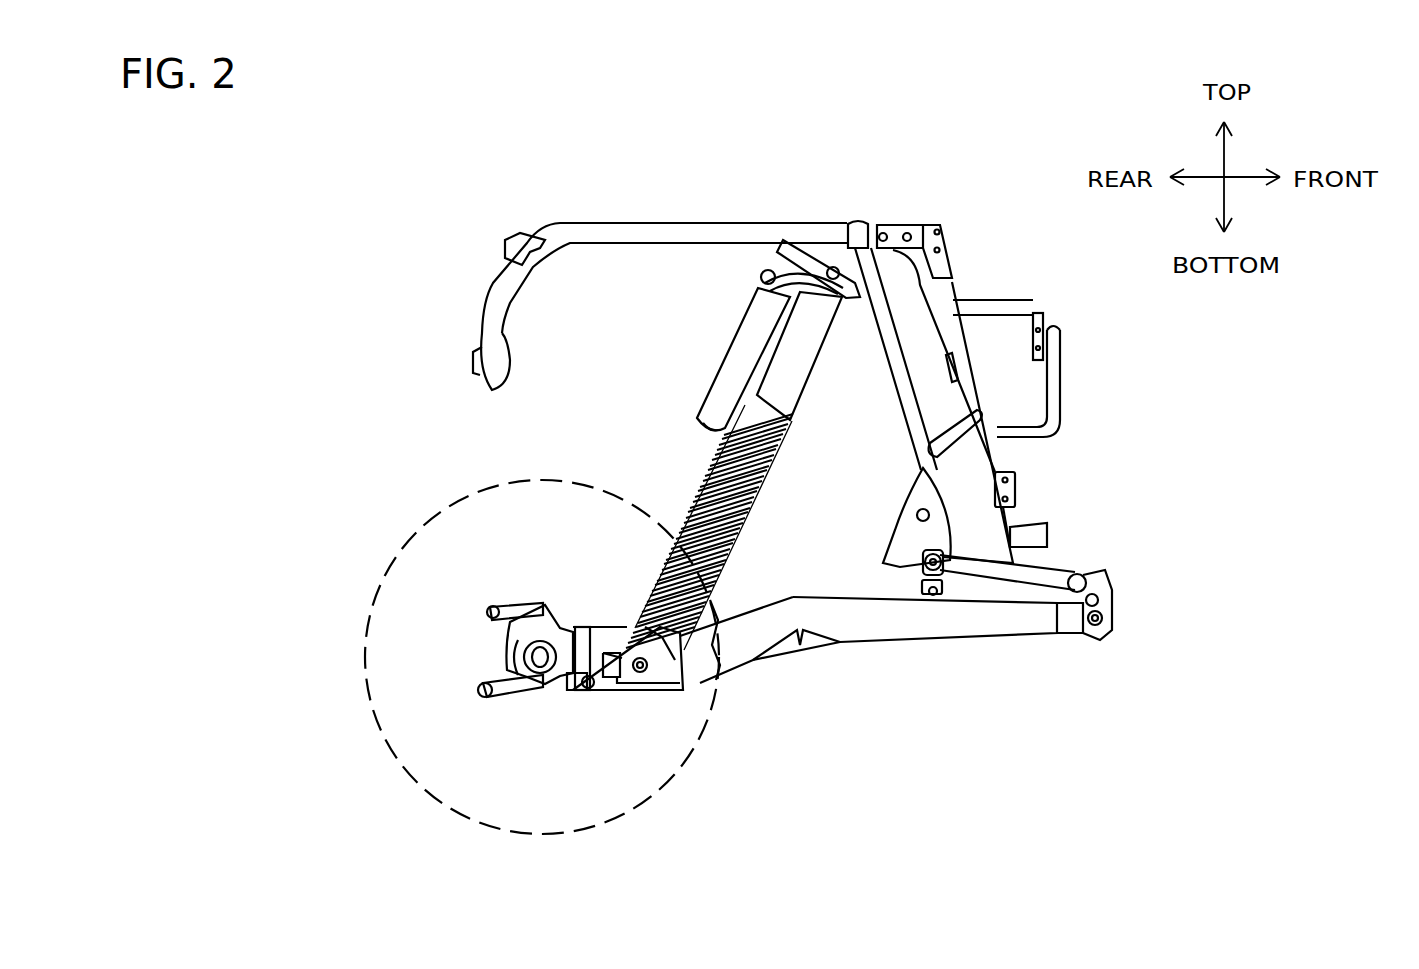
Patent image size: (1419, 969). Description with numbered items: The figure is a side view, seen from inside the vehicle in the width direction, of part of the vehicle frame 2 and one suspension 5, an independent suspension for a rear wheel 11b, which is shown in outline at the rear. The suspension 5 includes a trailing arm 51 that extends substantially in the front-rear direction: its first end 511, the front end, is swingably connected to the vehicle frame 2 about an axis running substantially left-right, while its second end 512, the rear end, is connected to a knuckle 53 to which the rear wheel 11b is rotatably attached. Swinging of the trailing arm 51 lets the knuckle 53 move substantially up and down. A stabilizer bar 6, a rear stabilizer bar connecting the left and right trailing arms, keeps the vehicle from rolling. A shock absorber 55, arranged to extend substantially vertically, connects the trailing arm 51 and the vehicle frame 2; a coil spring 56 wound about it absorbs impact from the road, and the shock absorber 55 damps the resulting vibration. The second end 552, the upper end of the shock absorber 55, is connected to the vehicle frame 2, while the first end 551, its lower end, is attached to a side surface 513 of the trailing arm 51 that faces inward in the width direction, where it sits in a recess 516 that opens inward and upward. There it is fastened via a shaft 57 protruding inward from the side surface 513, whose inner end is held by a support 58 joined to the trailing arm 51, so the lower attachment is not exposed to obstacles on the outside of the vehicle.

The vehicle frame 2 is at (680, 222).
The suspension 5 is at (687, 724).
The trailing arm 51 is at (868, 645).
The first end 511 is at (1080, 630).
The second end 512 is at (587, 703).
The side surface 513 is at (925, 620).
The recess 516 is at (705, 610).
The knuckle 53 is at (500, 648).
The shock absorber 55 is at (770, 356).
The first end 551 is at (636, 650).
The second end 552 is at (845, 298).
The spring 56 is at (758, 507).
The shaft 57 is at (643, 688).
The support 58 is at (670, 690).
The stabilizer bar 6 is at (1000, 590).
The rear wheel 11b is at (383, 574).